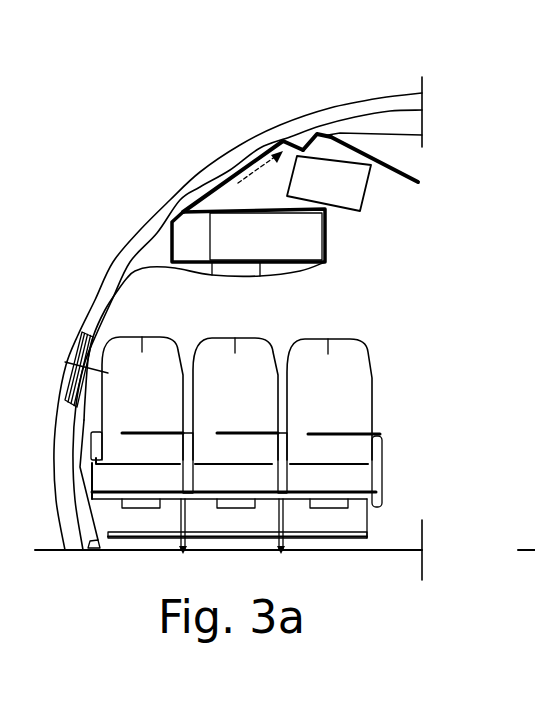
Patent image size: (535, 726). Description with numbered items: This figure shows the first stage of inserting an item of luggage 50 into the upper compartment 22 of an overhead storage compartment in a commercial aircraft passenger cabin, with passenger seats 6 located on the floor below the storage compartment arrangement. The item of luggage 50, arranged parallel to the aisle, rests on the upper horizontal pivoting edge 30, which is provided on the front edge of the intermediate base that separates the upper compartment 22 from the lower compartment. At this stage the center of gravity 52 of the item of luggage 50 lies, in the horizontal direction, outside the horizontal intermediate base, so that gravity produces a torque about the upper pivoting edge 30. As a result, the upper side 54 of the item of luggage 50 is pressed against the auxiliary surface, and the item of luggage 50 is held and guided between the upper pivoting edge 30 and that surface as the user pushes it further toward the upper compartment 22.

The passenger seat 6 is at (353, 382).
The upper compartment 22 is at (263, 174).
The upper horizontal pivoting edge 30 is at (346, 208).
The item of luggage 50 is at (284, 249).
The center of gravity 52 is at (330, 183).
The upper side 54 is at (332, 146).